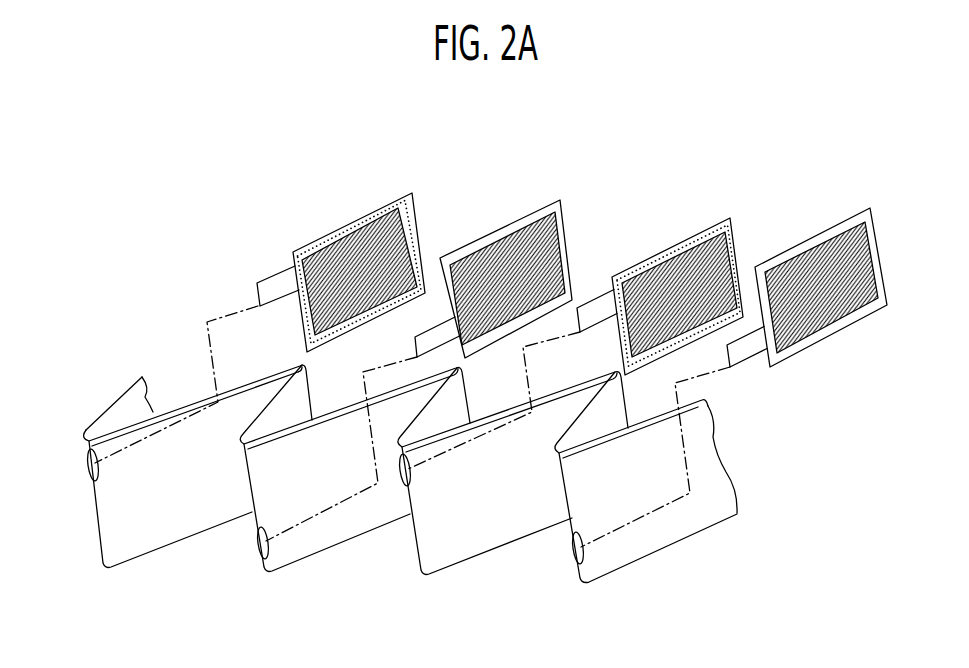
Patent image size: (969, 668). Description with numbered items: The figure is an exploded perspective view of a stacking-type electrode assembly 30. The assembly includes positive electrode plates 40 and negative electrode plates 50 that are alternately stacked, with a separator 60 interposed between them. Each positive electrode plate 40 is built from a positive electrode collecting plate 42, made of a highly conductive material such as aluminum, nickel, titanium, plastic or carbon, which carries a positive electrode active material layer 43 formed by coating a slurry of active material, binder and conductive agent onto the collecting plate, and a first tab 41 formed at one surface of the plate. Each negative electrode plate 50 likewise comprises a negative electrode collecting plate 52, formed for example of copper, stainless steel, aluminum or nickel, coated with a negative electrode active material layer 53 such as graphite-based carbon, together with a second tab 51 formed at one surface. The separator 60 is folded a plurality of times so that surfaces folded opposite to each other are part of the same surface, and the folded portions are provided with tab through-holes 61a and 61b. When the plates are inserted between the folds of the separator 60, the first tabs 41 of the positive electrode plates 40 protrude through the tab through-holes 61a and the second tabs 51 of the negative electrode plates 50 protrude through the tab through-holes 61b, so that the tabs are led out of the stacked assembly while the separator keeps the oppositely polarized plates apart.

The electrode assembly 30 is at (783, 144).
The positive electrode plate 40 is at (340, 214).
The first tab 41 is at (273, 283).
The positive electrode collecting plate 42 is at (412, 207).
The positive electrode active material layer 43 is at (415, 246).
The negative electrode plate 50 is at (517, 196).
The second tab 51 is at (417, 339).
The negative electrode collecting plate 52 is at (561, 200).
The negative electrode active material layer 53 is at (561, 249).
The separator 60 is at (754, 469).
The tab through-hole 61a is at (90, 483).
The tab through-hole 61b is at (261, 561).